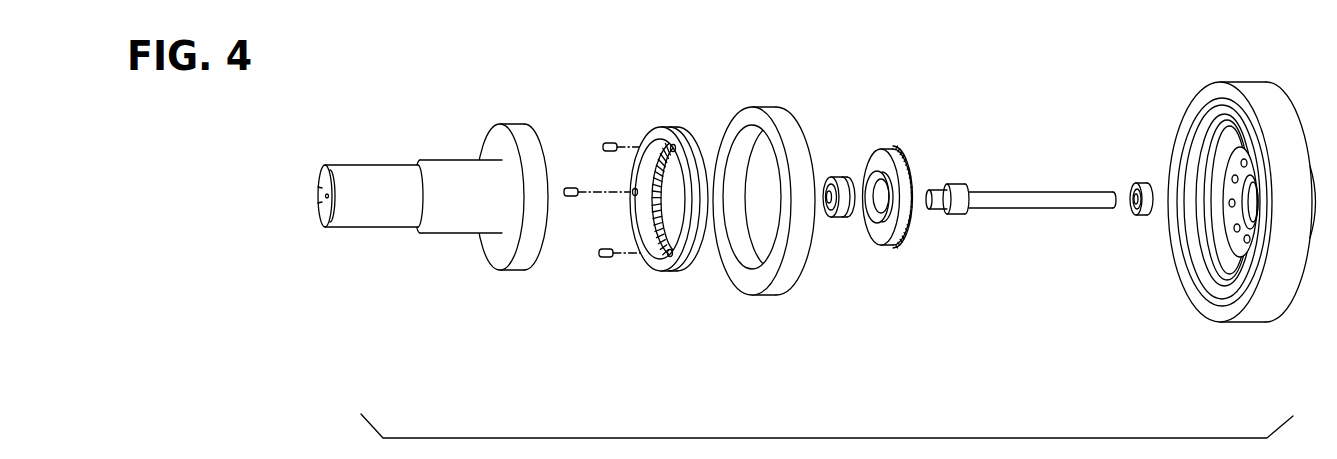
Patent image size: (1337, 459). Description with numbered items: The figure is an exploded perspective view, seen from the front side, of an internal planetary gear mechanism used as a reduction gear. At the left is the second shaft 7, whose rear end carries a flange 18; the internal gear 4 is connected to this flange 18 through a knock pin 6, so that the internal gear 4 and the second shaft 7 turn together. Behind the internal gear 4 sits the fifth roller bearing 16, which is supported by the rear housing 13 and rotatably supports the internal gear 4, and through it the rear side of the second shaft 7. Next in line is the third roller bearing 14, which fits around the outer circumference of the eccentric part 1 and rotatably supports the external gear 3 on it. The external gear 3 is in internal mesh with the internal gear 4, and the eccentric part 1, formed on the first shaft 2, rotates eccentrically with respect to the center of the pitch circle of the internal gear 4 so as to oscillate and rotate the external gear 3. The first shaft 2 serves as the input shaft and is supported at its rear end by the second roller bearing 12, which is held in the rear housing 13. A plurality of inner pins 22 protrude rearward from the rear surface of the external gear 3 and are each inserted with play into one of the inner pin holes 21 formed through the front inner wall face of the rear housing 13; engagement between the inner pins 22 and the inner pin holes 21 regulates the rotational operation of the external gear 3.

The eccentric part 1 is at (953, 179).
The first shaft 2 is at (1037, 204).
The external gear 3 is at (882, 231).
The internal gear 4 is at (689, 134).
The knock pin 6 is at (607, 248).
The second shaft 7 is at (455, 214).
The second roller bearing 12 is at (1143, 218).
The rear housing 13 is at (1253, 310).
The third roller bearing 14 is at (822, 229).
The fifth roller bearing 16 is at (747, 281).
The flange 18 is at (513, 124).
The inner pin holes 21 is at (1244, 237).
The inner pins 22 is at (915, 204).